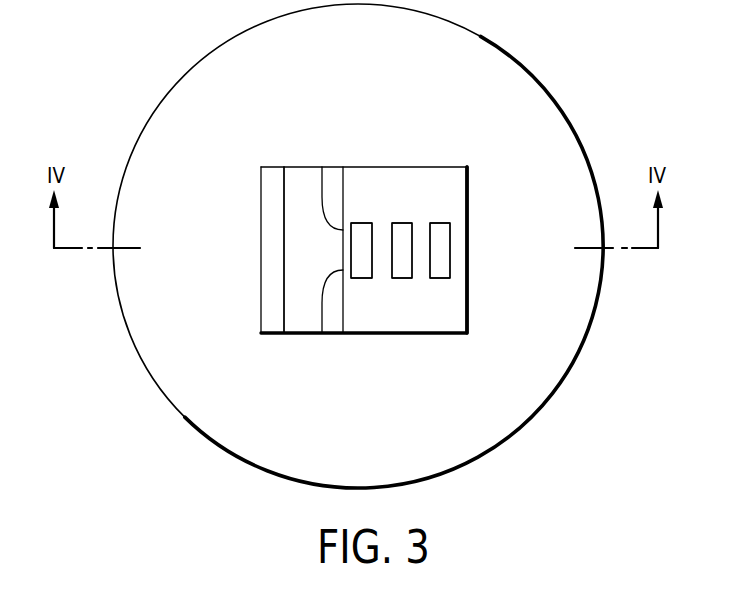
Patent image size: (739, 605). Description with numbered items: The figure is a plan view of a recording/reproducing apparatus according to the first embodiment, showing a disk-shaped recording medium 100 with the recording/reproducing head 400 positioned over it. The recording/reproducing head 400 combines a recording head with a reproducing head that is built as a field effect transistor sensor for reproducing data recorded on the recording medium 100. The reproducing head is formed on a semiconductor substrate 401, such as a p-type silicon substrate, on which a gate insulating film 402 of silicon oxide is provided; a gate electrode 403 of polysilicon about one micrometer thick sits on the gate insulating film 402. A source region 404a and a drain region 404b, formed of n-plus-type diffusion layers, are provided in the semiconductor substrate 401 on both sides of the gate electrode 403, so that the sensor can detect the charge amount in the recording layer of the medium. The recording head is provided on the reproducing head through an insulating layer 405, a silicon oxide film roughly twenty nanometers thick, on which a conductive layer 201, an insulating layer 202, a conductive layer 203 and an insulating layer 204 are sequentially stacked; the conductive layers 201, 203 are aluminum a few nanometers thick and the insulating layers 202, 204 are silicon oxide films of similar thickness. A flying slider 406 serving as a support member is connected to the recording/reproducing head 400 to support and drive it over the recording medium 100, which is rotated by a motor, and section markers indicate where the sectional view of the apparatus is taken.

The recording medium 100 is at (537, 72).
The recording/reproducing head 400 is at (477, 175).
The semiconductor substrate 401 is at (302, 318).
The gate insulating film 402 is at (347, 262).
The gate electrode 403 is at (365, 267).
The source region 404a is at (333, 318).
The drain region 404b is at (334, 188).
The insulating layer 405 is at (385, 255).
The flying slider 406 is at (272, 268).
The conductive layer 201 is at (403, 233).
The insulating layer 202 is at (420, 236).
The conductive layer 203 is at (440, 233).
The insulating layer 204 is at (456, 248).